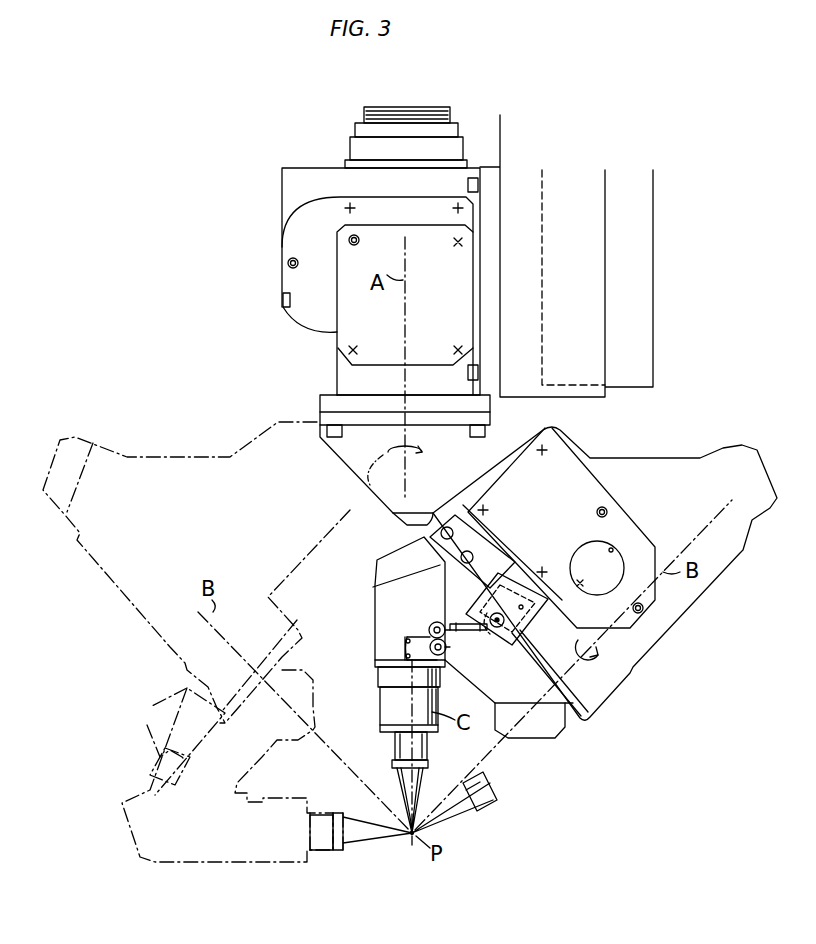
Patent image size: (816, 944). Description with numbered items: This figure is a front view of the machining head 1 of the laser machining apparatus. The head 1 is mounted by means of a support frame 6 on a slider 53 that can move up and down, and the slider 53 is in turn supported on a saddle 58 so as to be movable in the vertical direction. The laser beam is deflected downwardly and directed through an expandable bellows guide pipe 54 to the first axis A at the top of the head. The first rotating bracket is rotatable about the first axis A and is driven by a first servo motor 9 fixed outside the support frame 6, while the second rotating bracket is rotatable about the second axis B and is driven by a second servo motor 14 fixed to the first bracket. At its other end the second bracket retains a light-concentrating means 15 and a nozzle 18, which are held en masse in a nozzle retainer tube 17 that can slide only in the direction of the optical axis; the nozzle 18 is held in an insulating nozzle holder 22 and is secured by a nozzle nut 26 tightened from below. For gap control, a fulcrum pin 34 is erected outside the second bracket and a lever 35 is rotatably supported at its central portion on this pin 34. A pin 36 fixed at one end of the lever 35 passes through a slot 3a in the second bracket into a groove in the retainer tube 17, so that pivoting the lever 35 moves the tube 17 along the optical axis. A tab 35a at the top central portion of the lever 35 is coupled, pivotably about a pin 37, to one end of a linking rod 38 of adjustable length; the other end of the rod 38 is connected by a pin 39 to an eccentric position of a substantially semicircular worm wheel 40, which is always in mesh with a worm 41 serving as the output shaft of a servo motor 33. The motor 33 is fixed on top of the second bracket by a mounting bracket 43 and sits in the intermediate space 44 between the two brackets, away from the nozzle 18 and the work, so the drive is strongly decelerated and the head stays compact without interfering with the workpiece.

The machining head 1 is at (303, 412).
The slot 3a is at (406, 641).
The support frame 6 is at (466, 177).
The first servo motor 9 is at (475, 310).
The second servo motor 14 is at (588, 494).
The light-concentrating means 15 is at (380, 710).
The nozzle retainer tube 17 is at (390, 673).
The nozzle 18 is at (402, 783).
The nozzle holder 22 is at (395, 752).
The nozzle nut 26 is at (428, 763).
The servo motor 33 is at (474, 545).
The fulcrum pin 34 is at (447, 652).
The lever 35 is at (428, 640).
The tab 35a is at (424, 626).
The pin 36 is at (375, 662).
The pin 37 is at (420, 608).
The linking rod 38 is at (460, 620).
The pin 39 is at (496, 640).
The worm wheel 40 is at (530, 708).
The worm 41 is at (543, 597).
The mounting bracket 43 is at (514, 580).
The intermediate space 44 is at (500, 560).
The slider 53 is at (580, 397).
The expandable bellows guide pipe 54 is at (365, 112).
The saddle 58 is at (650, 313).